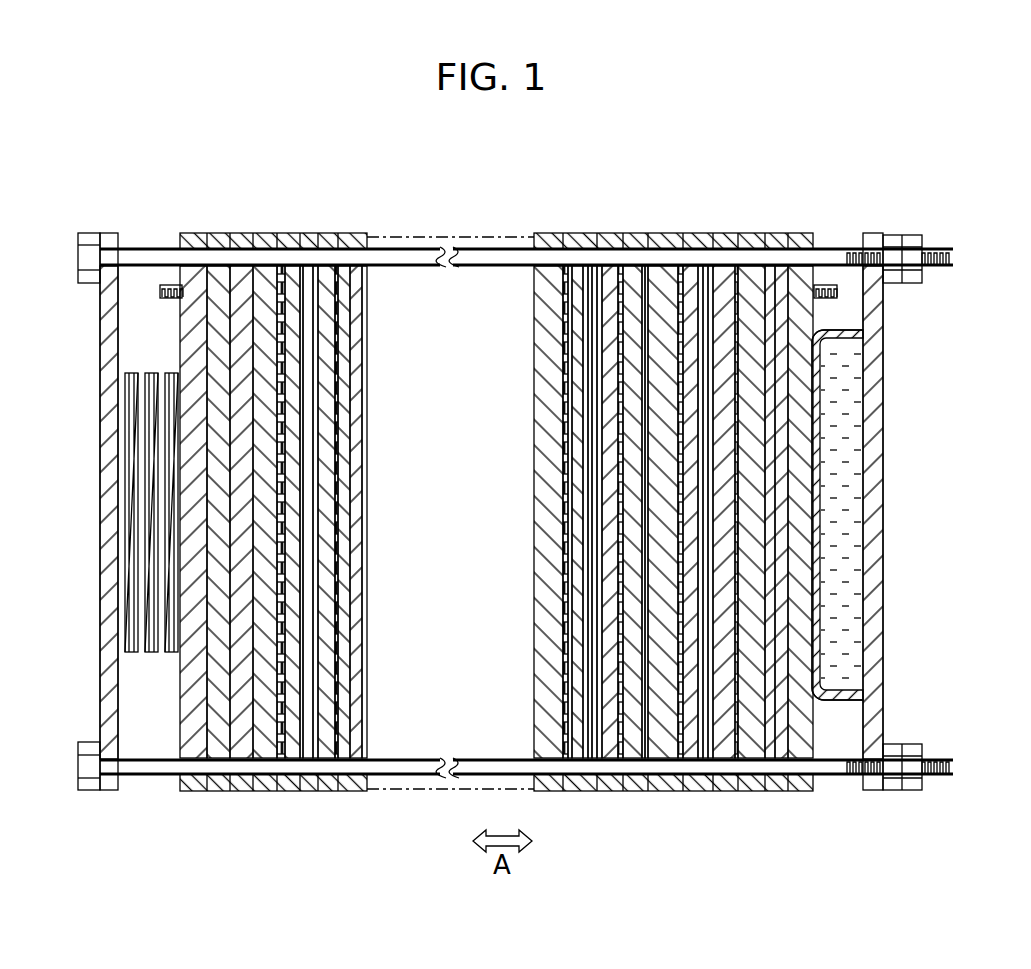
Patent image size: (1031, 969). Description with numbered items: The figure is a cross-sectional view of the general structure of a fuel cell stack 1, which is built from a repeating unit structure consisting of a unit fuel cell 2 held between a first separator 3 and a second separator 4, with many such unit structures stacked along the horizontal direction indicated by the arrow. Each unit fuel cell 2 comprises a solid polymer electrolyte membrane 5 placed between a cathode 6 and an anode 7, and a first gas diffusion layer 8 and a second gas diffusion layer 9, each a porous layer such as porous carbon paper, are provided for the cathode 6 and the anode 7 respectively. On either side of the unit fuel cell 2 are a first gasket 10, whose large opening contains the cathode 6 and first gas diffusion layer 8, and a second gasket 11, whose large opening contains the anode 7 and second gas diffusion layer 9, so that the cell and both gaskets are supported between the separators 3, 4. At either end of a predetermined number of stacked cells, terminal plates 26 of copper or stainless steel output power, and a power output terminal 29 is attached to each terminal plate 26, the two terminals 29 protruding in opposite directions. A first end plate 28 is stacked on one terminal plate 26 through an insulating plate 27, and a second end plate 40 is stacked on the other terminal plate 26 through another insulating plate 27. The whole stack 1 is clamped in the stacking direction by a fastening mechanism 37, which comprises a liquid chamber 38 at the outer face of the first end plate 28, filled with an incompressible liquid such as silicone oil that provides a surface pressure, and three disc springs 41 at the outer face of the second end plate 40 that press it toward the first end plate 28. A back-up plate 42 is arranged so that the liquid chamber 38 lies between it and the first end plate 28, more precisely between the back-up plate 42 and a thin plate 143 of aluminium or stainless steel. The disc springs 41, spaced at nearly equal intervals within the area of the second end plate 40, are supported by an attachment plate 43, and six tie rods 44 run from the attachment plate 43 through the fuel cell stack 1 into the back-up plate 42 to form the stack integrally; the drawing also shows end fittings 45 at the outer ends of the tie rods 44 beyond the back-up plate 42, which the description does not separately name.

The fuel cell stack 1 is at (470, 205).
The unit fuel cell 2 is at (318, 222).
The first separator 3 is at (355, 233).
The second separator 4 is at (290, 233).
The solid polymer electrolyte membrane 5 is at (570, 288).
The cathode 6 is at (580, 325).
The anode 7 is at (590, 347).
The first gas diffusion layer 8 is at (604, 390).
The second gas diffusion layer 9 is at (570, 427).
The first gasket 10 is at (605, 792).
The second gasket 11 is at (580, 792).
The terminal plate 26 is at (245, 233).
The insulating plate 27 is at (225, 233).
The first end plate 28 is at (814, 224).
The power output terminal 29 is at (170, 298).
The fastening mechanism 37 is at (905, 452).
The liquid chamber 38 is at (856, 372).
The second end plate 40 is at (191, 233).
The disc spring 41 is at (141, 480).
The back-up plate 42 is at (880, 622).
The attachment plate 43 is at (99, 545).
The tie rod 44 is at (400, 266).
The nut 45 is at (905, 235).
The thin plate 143 is at (826, 553).